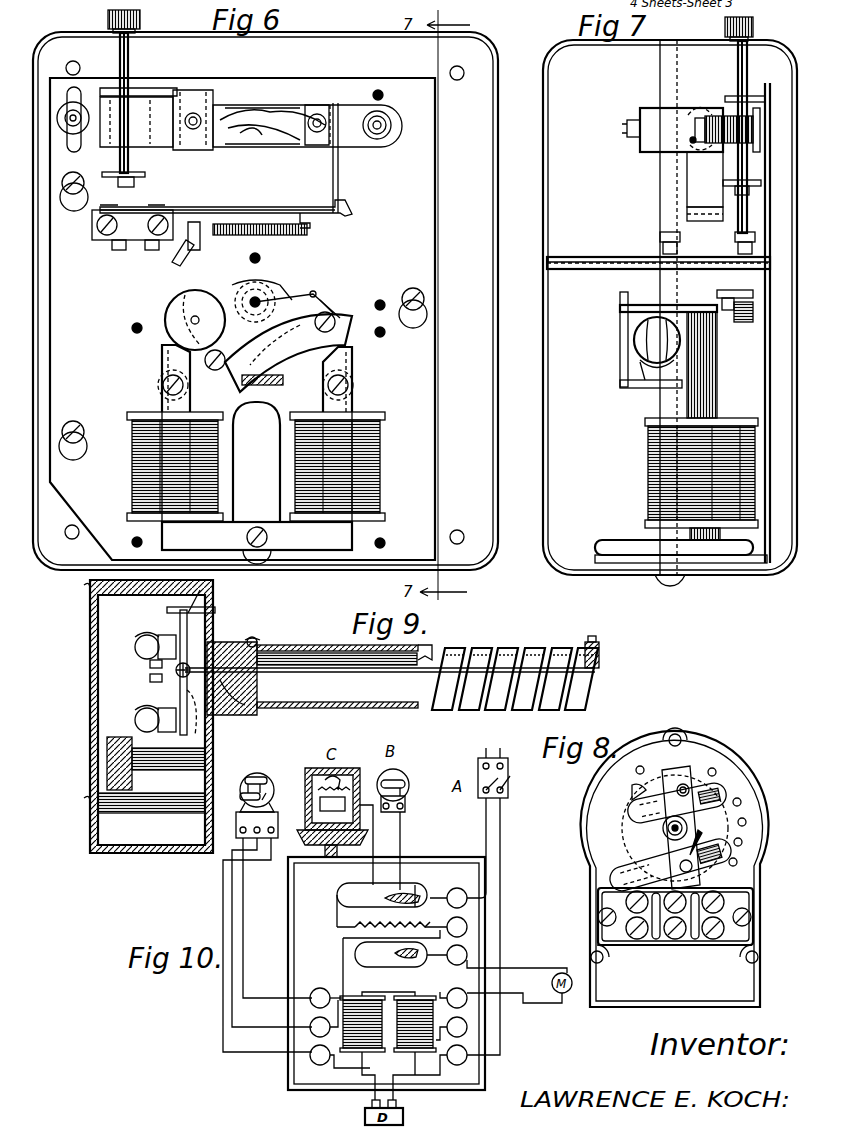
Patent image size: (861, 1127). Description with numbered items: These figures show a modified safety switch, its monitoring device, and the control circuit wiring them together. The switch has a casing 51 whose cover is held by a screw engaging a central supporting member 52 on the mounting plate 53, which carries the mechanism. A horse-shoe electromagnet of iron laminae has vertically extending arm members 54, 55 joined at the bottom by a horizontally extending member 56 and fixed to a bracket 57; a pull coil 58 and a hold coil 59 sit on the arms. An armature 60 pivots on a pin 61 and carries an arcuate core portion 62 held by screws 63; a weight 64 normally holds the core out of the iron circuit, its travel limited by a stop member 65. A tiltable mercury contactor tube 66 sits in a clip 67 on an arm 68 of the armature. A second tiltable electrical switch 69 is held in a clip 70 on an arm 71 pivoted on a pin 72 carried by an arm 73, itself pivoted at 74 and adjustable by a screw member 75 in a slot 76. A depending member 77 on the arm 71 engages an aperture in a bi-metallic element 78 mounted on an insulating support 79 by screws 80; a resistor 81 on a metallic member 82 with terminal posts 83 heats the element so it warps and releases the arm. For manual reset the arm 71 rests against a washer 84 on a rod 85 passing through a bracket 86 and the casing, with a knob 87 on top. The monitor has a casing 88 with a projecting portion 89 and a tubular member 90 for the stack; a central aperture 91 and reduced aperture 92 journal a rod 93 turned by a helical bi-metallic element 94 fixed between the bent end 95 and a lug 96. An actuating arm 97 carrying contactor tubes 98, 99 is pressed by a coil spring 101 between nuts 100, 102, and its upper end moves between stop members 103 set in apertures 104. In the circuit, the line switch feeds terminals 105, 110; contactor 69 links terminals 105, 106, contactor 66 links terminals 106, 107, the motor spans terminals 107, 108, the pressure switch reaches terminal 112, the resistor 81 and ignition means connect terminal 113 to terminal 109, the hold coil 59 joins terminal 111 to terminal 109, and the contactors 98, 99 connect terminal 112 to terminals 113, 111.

In FIG. 6, the casing 51 is at (491, 142).
In FIG. 7, the casing 51 is at (788, 56).
In FIG. 7, the central supporting member 52 is at (552, 255).
In FIG. 6, the mounting plate 53 is at (62, 356).
In FIG. 7, the mounting plate 53 is at (771, 198).
In FIG. 6, the vertically extending arm member 54 is at (161, 358).
In FIG. 6, the vertically extending arm member 55 is at (353, 366).
In FIG. 7, the vertically extending arm member 55 is at (697, 402).
In FIG. 6, the horizontally extending member 56 is at (322, 545).
In FIG. 7, the horizontally extending member 56 is at (705, 533).
In FIG. 6, the bracket 57 is at (257, 462).
In FIG. 7, the bracket 57 is at (758, 462).
In FIG. 6, the pull coil 58 is at (140, 468).
In FIG. 10, the pull coil 58 is at (362, 1040).
In FIG. 6, the hold coil 59 is at (379, 474).
In FIG. 7, the hold coil 59 is at (662, 467).
In FIG. 10, the hold coil 59 is at (415, 1040).
In FIG. 6, the armature 60 is at (326, 297).
In FIG. 7, the armature 60 is at (721, 286).
In FIG. 6, the pin 61 is at (262, 300).
In FIG. 7, the pin 61 is at (652, 285).
In FIG. 6, the core portion 62 is at (275, 336).
In FIG. 6, the screws 63 is at (334, 316).
In FIG. 6, the weight 64 is at (185, 304).
In FIG. 6, the stop member 65 is at (315, 291).
In FIG. 7, the stop member 65 is at (712, 297).
In FIG. 7, the tiltable mercury contactor tube 66 is at (642, 340).
In FIG. 10, the tiltable mercury contactor tube 66 is at (390, 957).
In FIG. 7, the clip 67 is at (638, 370).
In FIG. 6, the arm 68 is at (283, 384).
In FIG. 7, the arm 68 is at (627, 383).
In FIG. 6, the second tiltable electrical switch 69 is at (267, 107).
In FIG. 7, the second tiltable electrical switch 69 is at (696, 103).
In FIG. 10, the second tiltable electrical switch 69 is at (391, 889).
In FIG. 6, the clip 70 is at (201, 100).
In FIG. 7, the clip 70 is at (707, 106).
In FIG. 6, the arm 71 is at (292, 145).
In FIG. 6, the pin 72 is at (322, 116).
In FIG. 7, the pin 72 is at (630, 128).
In FIG. 6, the arm 73 is at (355, 138).
In FIG. 7, the arm 73 is at (759, 131).
In FIG. 6, the pivot 74 is at (388, 120).
In FIG. 7, the pivot 74 is at (695, 132).
In FIG. 6, the screw member 75 is at (72, 128).
In FIG. 6, the slot 76 is at (78, 147).
In FIG. 6, the depending member 77 is at (341, 188).
In FIG. 7, the depending member 77 is at (700, 185).
In FIG. 6, the bi-metallic element 78 is at (230, 209).
In FIG. 7, the bi-metallic element 78 is at (687, 217).
In FIG. 6, the insulating support 79 is at (123, 236).
In FIG. 6, the screws 80 is at (150, 225).
In FIG. 6, the resistor 81 is at (249, 242).
In FIG. 10, the resistor 81 is at (360, 926).
In FIG. 6, the metallic member 82 is at (305, 231).
In FIG. 6, the terminal posts 83 is at (197, 249).
In FIG. 6, the washer 84 is at (145, 175).
In FIG. 7, the washer 84 is at (742, 203).
In FIG. 6, the rod 85 is at (128, 73).
In FIG. 7, the rod 85 is at (742, 137).
In FIG. 6, the bracket 86 is at (147, 92).
In FIG. 7, the bracket 86 is at (753, 97).
In FIG. 6, the knob 87 is at (134, 26).
In FIG. 7, the knob 87 is at (754, 25).
In FIG. 9, the casing 88 is at (216, 759).
In FIG. 8, the casing 88 is at (579, 830).
In FIG. 9, the projecting portion 89 is at (253, 648).
In FIG. 9, the tubular member 90 is at (345, 706).
In FIG. 9, the central aperture 91 is at (258, 680).
In FIG. 9, the reduced aperture 92 is at (237, 697).
In FIG. 9, the rod 93 is at (318, 700).
In FIG. 9, the helical bi-metallic element 94 is at (474, 708).
In FIG. 9, the end 95 is at (600, 662).
In FIG. 9, the lug 96 is at (432, 647).
In FIG. 9, the actuating arm 97 is at (188, 665).
In FIG. 8, the actuating arm 97 is at (662, 815).
In FIG. 9, the contactor tube 98 is at (135, 642).
In FIG. 8, the contactor tube 98 is at (707, 787).
In FIG. 10, the contactor tube 98 is at (262, 779).
In FIG. 9, the contactor tube 99 is at (135, 712).
In FIG. 8, the contactor tube 99 is at (715, 860).
In FIG. 10, the contactor tube 99 is at (265, 800).
In FIG. 9, the nut 100 is at (194, 718).
In FIG. 9, the coil spring 101 is at (150, 667).
In FIG. 9, the nut 102 is at (150, 680).
In FIG. 9, the stop members 103 is at (167, 610).
In FIG. 8, the stop members 103 is at (712, 768).
In FIG. 8, the apertures 104 is at (741, 805).
In FIG. 10, the terminal 105 is at (464, 896).
In FIG. 10, the terminal 106 is at (465, 925).
In FIG. 10, the terminal 107 is at (465, 953).
In FIG. 10, the terminal 108 is at (466, 1001).
In FIG. 10, the terminal 109 is at (466, 1029).
In FIG. 10, the terminal 110 is at (466, 1056).
In FIG. 10, the terminal 111 is at (311, 1058).
In FIG. 10, the terminal 112 is at (311, 1028).
In FIG. 10, the terminal 113 is at (311, 999).